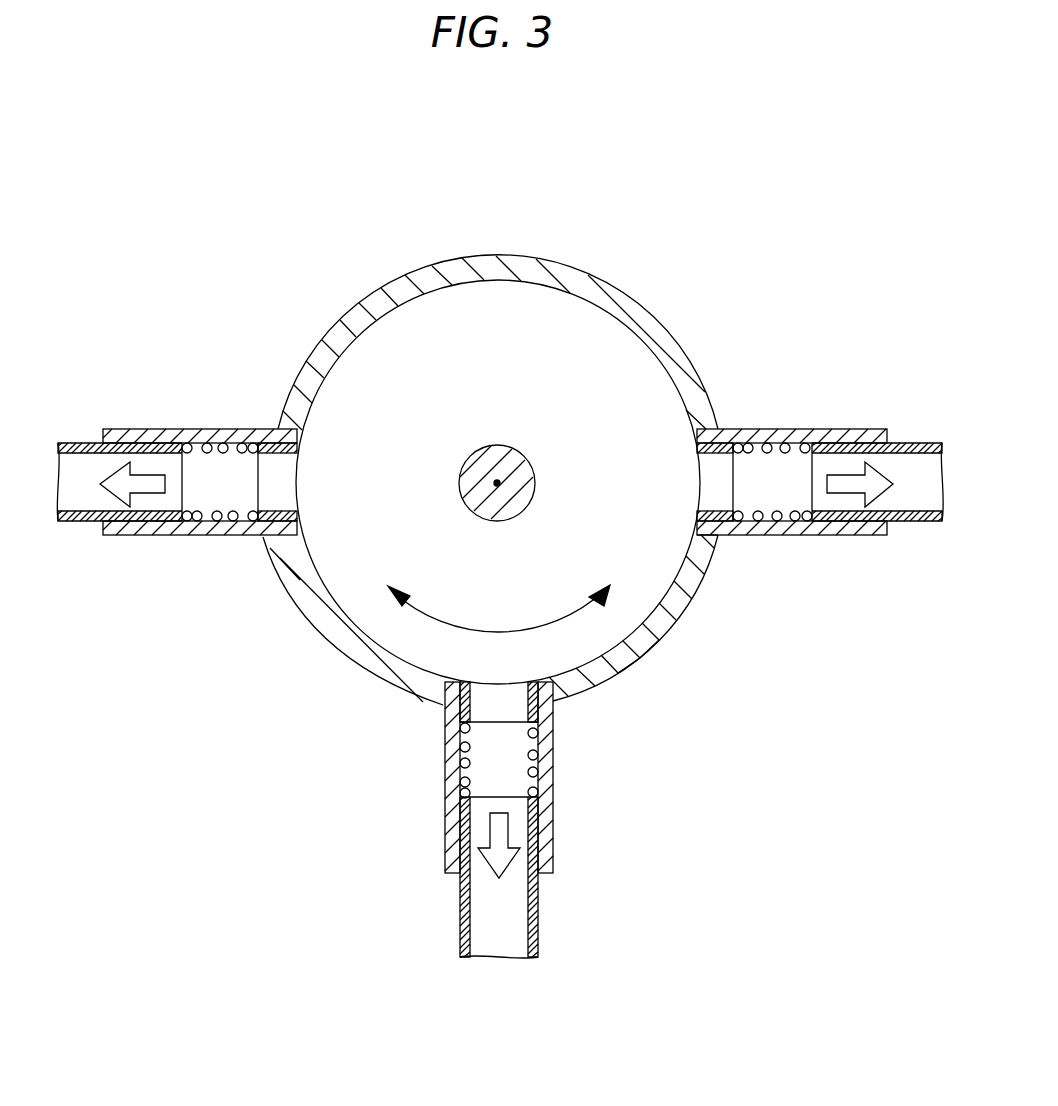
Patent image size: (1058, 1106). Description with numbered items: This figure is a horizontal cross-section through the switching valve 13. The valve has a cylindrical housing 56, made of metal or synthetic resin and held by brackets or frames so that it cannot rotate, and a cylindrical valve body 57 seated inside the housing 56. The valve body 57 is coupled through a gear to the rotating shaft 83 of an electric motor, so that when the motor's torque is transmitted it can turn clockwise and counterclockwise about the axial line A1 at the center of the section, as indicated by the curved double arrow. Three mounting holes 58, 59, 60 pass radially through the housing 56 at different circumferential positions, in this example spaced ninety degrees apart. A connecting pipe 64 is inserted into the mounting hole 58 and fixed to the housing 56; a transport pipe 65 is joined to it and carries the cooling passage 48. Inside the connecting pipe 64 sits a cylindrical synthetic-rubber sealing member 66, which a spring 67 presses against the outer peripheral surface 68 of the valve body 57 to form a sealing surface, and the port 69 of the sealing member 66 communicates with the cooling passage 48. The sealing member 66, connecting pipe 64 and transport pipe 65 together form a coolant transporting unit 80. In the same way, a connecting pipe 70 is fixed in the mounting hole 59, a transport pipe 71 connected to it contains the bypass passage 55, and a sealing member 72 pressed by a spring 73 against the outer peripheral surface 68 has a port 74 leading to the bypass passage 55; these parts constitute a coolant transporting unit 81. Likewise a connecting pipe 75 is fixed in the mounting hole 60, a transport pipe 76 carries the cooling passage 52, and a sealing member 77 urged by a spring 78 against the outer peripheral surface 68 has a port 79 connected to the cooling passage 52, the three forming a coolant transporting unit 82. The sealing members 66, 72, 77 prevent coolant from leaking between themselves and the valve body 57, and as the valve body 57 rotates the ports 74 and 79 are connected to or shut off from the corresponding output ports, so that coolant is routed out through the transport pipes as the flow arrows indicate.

The switching valve 13 is at (668, 196).
The cooling passage 48 is at (913, 460).
The cooling passage 52 is at (75, 460).
The bypass passage 55 is at (517, 938).
The housing 56 is at (620, 293).
The valve body 57 is at (560, 305).
The mounting hole 58 is at (716, 540).
The mounting hole 59 is at (541, 698).
The mounting hole 60 is at (257, 527).
The connecting pipe 64 is at (842, 535).
The transport pipe 65 is at (907, 521).
The sealing member 66 is at (720, 447).
The spring 67 is at (770, 530).
The outer peripheral surface 68 is at (647, 628).
The port 69 is at (730, 485).
The connecting pipe 70 is at (547, 807).
The transport pipe 71 is at (533, 897).
The sealing member 72 is at (460, 718).
The spring 73 is at (460, 778).
The port 74 is at (498, 718).
The connecting pipe 75 is at (170, 535).
The transport pipe 76 is at (92, 525).
The sealing member 77 is at (263, 487).
The spring 78 is at (222, 527).
The port 79 is at (237, 467).
The coolant transporting unit 80 is at (858, 369).
The coolant transporting unit 81 is at (578, 843).
The coolant transporting unit 82 is at (130, 369).
The rotating shaft 83 is at (508, 458).
The axial line A1 is at (497, 483).